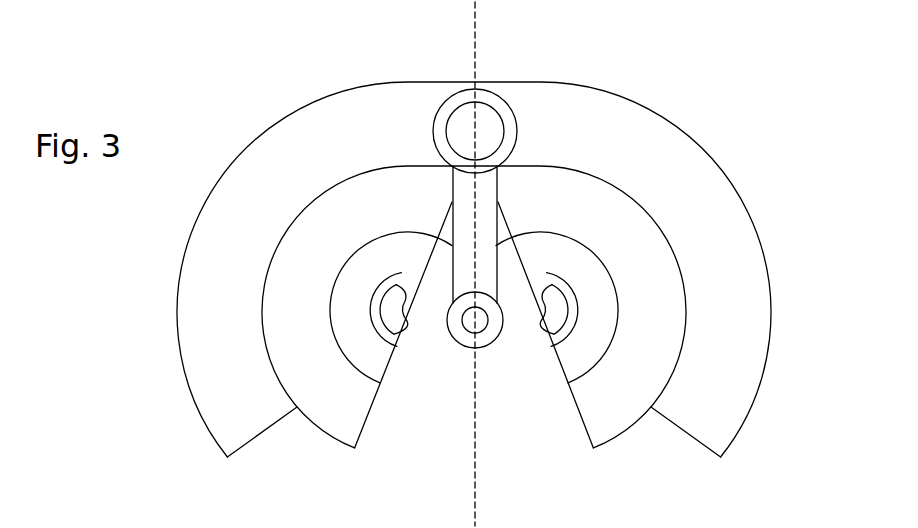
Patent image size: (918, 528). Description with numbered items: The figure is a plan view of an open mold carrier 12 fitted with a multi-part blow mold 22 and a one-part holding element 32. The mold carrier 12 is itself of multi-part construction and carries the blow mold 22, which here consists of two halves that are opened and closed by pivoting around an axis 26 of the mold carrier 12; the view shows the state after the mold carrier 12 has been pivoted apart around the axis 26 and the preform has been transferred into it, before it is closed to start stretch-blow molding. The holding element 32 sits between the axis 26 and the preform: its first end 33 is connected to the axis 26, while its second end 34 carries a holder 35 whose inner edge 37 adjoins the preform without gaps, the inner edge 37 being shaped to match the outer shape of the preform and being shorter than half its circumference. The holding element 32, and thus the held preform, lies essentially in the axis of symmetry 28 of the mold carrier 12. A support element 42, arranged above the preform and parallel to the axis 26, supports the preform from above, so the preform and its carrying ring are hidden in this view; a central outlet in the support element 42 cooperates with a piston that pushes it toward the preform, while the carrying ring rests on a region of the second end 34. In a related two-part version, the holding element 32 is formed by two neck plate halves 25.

The mold carrier 12 is at (212, 80).
The blow mold 22 is at (597, 329).
The neck plate halves 25 is at (474, 325).
The axis 26 is at (490, 125).
The axis of symmetry 28 is at (478, 481).
The holding element 32 is at (474, 257).
The first end 33 is at (474, 252).
The second end 34 is at (540, 246).
The holder 35 is at (630, 259).
The inner edge 37 is at (425, 175).
The support element 42 is at (464, 339).